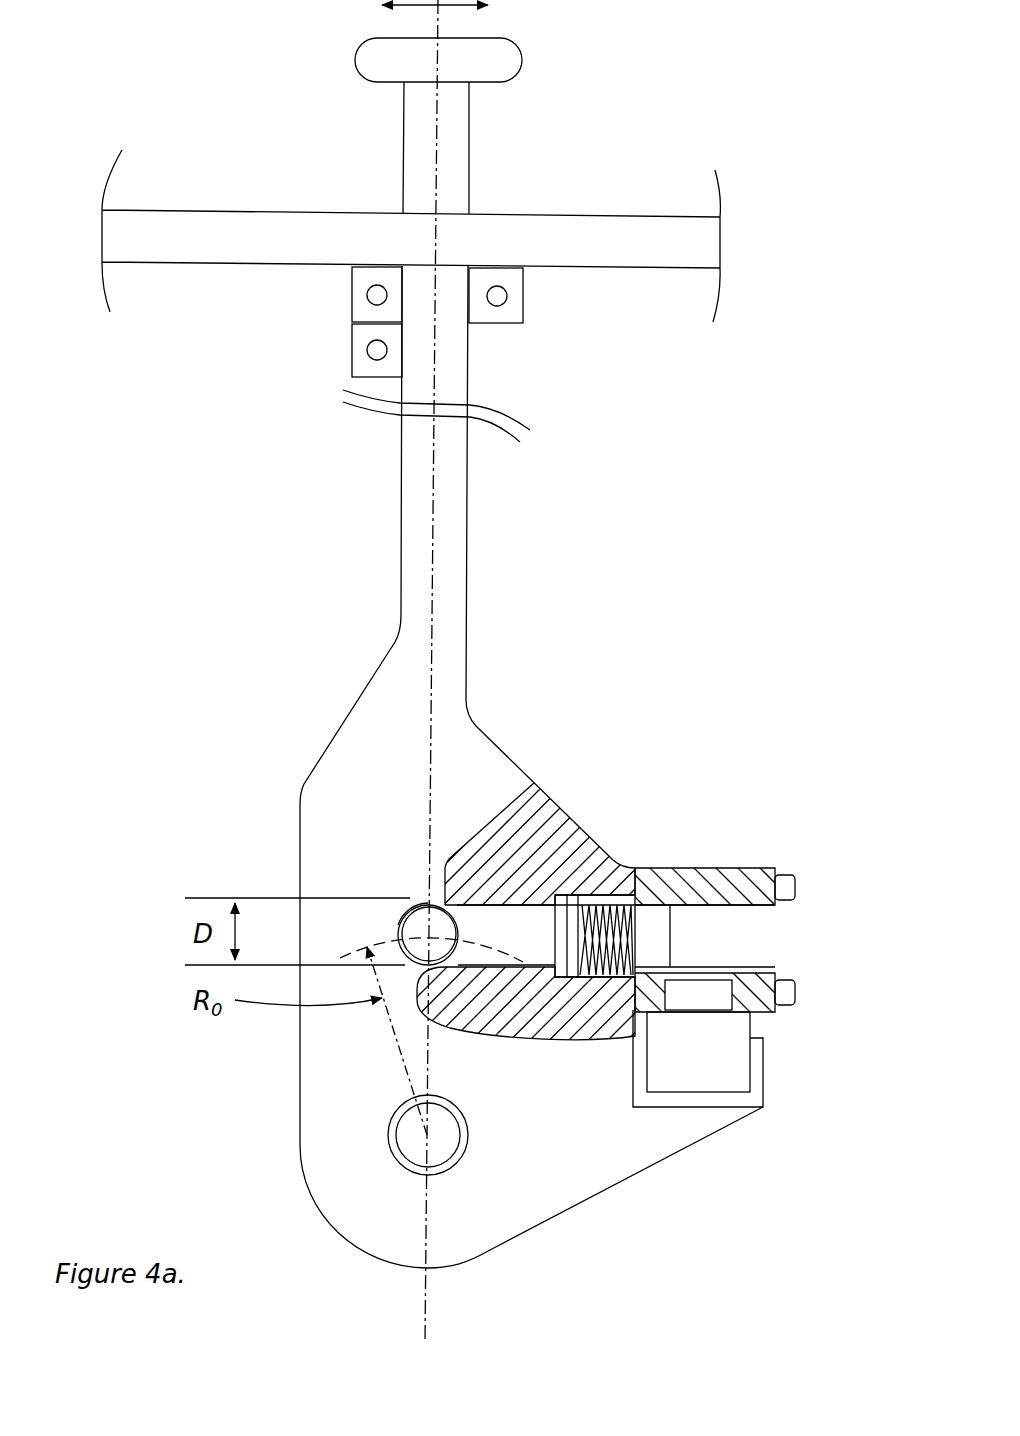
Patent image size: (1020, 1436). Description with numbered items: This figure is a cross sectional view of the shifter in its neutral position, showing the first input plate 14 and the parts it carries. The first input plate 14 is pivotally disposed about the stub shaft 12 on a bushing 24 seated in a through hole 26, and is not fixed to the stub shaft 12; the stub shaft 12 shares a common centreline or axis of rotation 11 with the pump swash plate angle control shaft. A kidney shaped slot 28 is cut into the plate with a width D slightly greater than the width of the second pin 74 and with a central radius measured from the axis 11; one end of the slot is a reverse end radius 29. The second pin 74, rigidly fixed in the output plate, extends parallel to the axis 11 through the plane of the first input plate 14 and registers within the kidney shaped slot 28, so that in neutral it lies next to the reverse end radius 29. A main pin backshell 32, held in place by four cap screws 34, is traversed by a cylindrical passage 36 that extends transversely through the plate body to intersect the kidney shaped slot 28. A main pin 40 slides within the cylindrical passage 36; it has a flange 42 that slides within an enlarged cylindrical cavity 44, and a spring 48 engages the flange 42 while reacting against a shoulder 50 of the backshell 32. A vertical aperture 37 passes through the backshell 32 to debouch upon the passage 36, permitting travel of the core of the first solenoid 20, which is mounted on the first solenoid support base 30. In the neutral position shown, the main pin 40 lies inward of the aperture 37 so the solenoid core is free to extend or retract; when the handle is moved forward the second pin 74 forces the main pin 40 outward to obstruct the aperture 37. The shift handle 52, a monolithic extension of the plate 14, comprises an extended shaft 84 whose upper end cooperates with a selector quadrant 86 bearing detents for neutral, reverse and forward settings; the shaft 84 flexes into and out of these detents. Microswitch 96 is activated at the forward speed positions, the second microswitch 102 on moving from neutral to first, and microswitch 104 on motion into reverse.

The axis of rotation 11 is at (430, 552).
The stub shaft 12 is at (418, 1137).
The first input plate 14 is at (388, 697).
The first solenoid 20 is at (717, 1057).
The bushing 24 is at (393, 1103).
The through hole 26 is at (387, 1133).
The kidney shaped slot 28 is at (400, 915).
The reverse end radius 29 is at (393, 925).
The first solenoid support base 30 is at (700, 1107).
The main pin backshell 32 is at (683, 867).
The cap screws 34 is at (792, 870).
The cylindrical passage 36 is at (723, 932).
The vertical aperture 37 is at (723, 977).
The main pin 40 is at (510, 905).
The flange 42 is at (567, 893).
The enlarged cylindrical cavity 44 is at (587, 893).
The spring 48 is at (603, 897).
The shoulder 50 is at (630, 889).
The shift handle 52 is at (357, 58).
The second pin 74 is at (415, 906).
The extended shaft 84 is at (402, 138).
The selector quadrant 86 is at (226, 208).
The microswitch 96 is at (352, 298).
The second microswitch 102 is at (352, 350).
The microswitch 104 is at (507, 328).